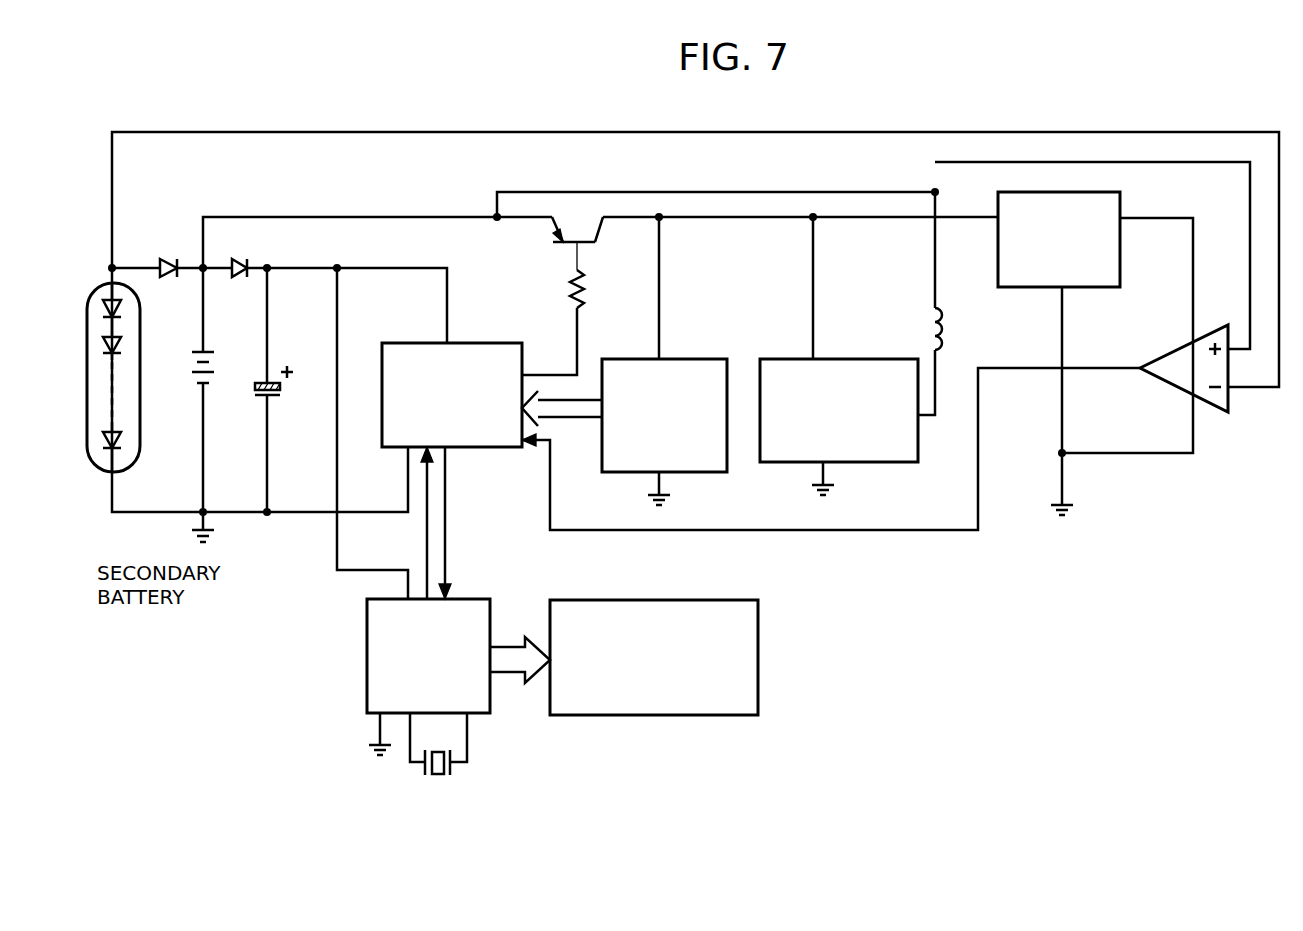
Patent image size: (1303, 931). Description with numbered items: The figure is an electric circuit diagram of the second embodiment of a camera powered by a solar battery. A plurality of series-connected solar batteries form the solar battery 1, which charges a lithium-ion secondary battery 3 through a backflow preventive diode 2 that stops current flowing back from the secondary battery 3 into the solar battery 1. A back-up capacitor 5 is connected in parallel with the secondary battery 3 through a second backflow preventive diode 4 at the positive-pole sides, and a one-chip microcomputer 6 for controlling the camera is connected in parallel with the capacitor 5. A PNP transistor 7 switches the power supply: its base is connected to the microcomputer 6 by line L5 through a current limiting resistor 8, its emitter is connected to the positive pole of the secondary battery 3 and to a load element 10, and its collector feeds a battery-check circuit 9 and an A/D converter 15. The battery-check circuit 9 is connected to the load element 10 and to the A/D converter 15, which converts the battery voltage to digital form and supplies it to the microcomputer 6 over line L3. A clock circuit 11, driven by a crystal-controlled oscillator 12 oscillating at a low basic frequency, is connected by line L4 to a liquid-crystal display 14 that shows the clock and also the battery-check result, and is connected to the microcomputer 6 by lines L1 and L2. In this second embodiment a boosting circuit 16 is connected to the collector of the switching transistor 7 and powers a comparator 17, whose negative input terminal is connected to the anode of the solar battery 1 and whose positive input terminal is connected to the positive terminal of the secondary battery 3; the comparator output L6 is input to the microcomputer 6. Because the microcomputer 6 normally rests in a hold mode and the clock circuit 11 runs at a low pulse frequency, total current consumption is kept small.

The solar battery 1 is at (130, 283).
The backflow preventive diode 2 is at (168, 262).
The secondary battery 3 is at (195, 387).
The backflow preventive diode 4 is at (240, 280).
The back-up capacitor 5 is at (252, 390).
The microcomputer 6 is at (493, 343).
The PNP transistor 7 is at (603, 232).
The current limiting resistor 8 is at (584, 290).
The battery-check circuit 9 is at (843, 359).
The load element 10 is at (950, 331).
The clock circuit 11 is at (367, 673).
The crystal-controlled oscillator 12 is at (440, 785).
The liquid-crystal display 14 is at (685, 600).
The A/D converter 15 is at (693, 359).
The boosting circuit 16 is at (1122, 276).
The comparator 17 is at (1175, 384).
The line L1 is at (426, 552).
The line L2 is at (446, 552).
The line L3 is at (583, 412).
The line L4 is at (508, 672).
The line L5 is at (575, 338).
The output L6 is at (930, 537).